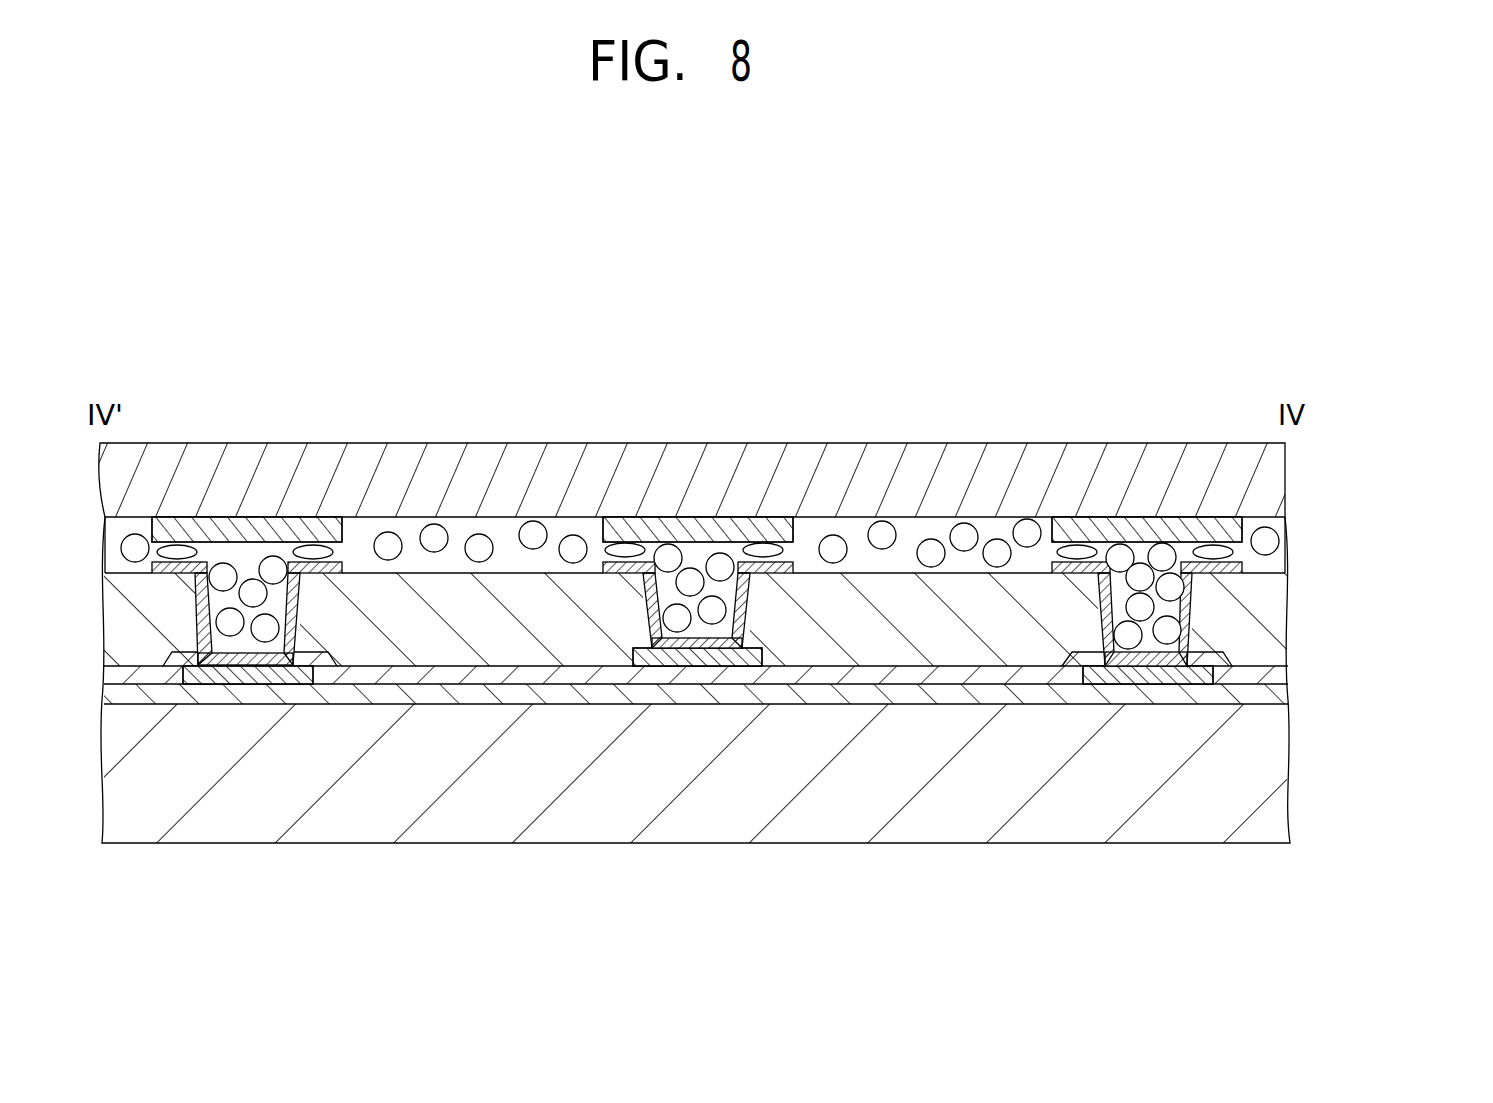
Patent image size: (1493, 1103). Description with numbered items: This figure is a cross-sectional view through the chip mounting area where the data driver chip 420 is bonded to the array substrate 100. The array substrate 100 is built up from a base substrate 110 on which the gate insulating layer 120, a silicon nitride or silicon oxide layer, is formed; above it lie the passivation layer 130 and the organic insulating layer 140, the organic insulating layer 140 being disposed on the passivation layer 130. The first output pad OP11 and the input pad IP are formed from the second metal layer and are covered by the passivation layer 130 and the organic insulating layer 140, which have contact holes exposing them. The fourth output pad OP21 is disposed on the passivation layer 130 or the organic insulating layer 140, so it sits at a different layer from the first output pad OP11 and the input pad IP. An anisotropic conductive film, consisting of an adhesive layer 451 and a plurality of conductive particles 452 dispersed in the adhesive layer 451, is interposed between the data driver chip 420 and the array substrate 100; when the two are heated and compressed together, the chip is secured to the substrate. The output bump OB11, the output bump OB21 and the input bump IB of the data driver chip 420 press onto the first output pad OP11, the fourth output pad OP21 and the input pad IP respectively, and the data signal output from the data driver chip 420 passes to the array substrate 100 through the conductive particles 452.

The data driver chip 420 is at (993, 480).
The conductive particles 452 is at (1278, 538).
The adhesive layer 451 is at (1277, 566).
The organic insulating layer 140 is at (1270, 615).
The passivation layer 130 is at (1272, 668).
The gate insulating layer 120 is at (1272, 693).
The base substrate 110 is at (1270, 753).
The array substrate 100 is at (1388, 600).
The output bump OB11 is at (243, 517).
The output bump OB21 is at (693, 517).
The input bump IB is at (1133, 517).
The first output pad OP11 is at (258, 668).
The fourth output pad OP21 is at (705, 668).
The input pad IP is at (1143, 672).